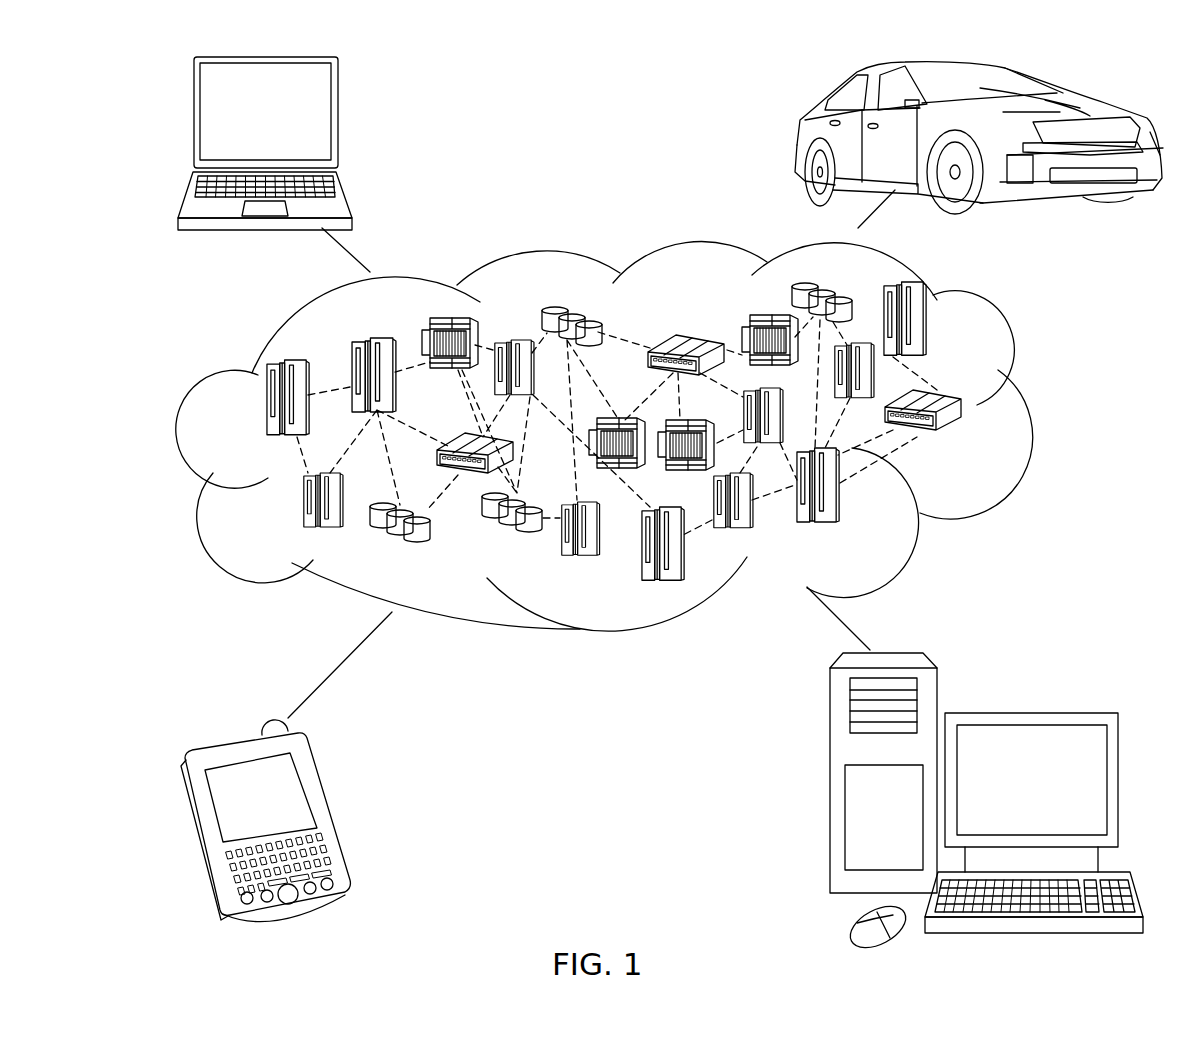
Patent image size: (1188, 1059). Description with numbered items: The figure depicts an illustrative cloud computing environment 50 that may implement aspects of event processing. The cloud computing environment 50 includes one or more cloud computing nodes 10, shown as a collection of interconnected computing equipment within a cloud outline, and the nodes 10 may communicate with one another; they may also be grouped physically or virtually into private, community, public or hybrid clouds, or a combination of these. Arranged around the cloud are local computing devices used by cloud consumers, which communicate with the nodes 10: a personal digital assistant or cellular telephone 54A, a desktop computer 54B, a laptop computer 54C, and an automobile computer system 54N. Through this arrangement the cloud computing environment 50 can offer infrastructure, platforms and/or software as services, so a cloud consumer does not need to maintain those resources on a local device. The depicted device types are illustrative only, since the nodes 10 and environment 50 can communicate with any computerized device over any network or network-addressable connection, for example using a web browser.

The cloud computing node 10 is at (968, 442).
The cloud computing environment 50 is at (629, 436).
The personal digital assistant or cellular telephone 54A is at (325, 811).
The desktop computer 54B is at (1030, 712).
The laptop computer 54C is at (338, 120).
The automobile computer system 54N is at (800, 138).